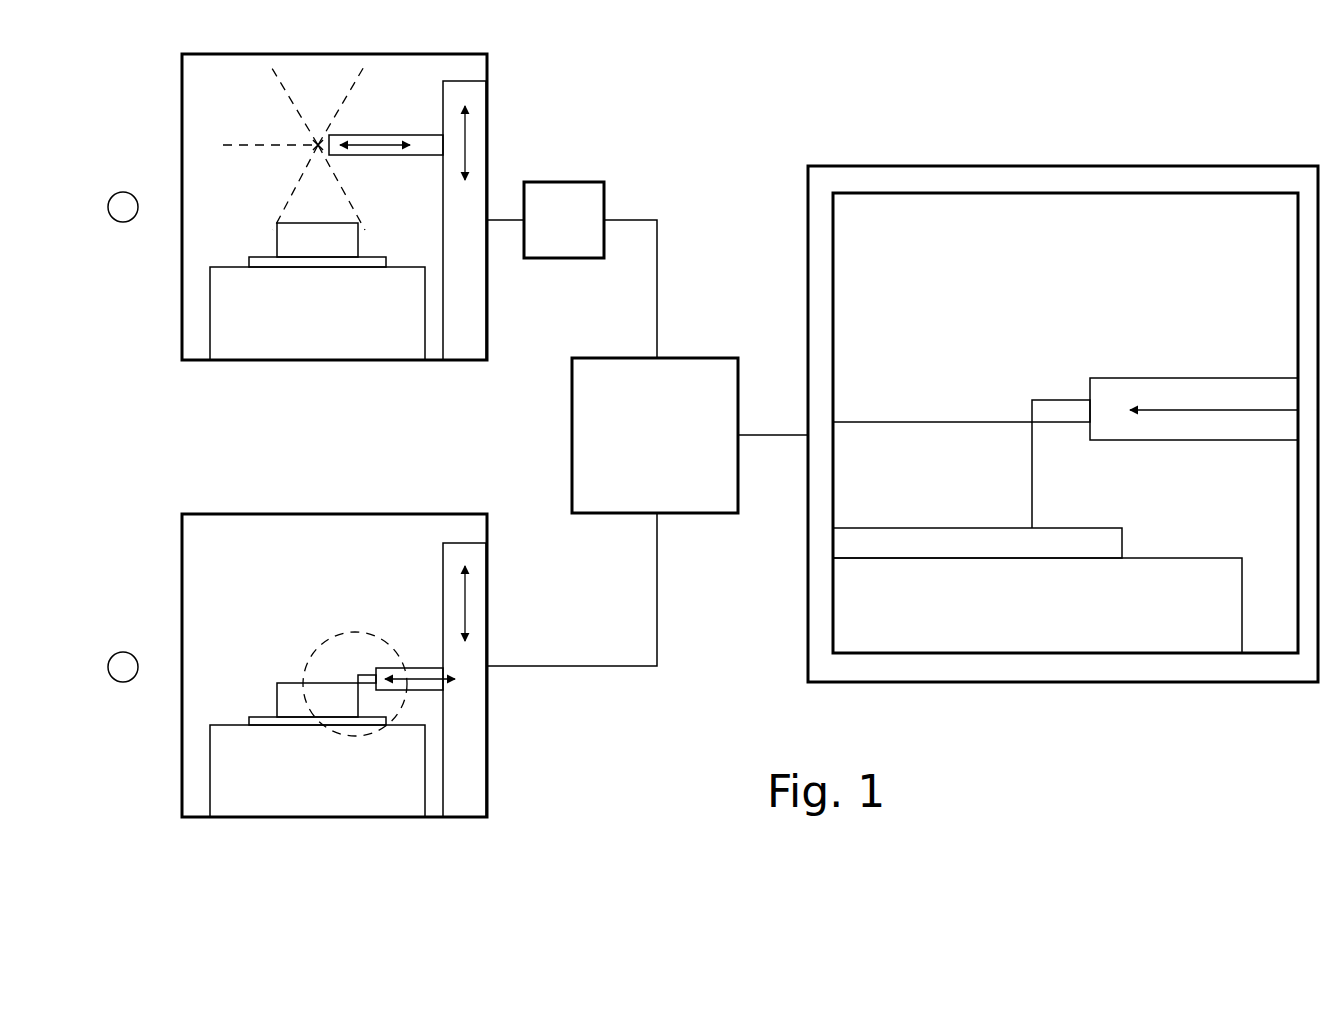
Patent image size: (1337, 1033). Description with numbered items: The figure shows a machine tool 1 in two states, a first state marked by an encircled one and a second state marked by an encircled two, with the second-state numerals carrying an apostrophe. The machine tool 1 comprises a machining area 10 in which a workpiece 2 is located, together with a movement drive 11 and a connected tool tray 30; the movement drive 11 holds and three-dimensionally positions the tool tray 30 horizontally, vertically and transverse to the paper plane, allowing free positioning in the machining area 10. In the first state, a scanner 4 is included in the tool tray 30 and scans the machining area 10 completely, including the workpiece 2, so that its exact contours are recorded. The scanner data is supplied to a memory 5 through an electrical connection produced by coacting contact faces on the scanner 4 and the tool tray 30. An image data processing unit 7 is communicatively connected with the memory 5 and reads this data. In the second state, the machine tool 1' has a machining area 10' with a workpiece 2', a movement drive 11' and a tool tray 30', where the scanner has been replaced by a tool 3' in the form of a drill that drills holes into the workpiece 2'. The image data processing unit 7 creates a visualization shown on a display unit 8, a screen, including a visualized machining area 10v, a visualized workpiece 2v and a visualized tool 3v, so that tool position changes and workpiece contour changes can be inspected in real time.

The machine tool 1 is at (350, 204).
The machining area 10 is at (302, 207).
The movement drive 11 is at (493, 220).
The tool tray 30 is at (450, 138).
The scanner 4 is at (316, 143).
The workpiece 2 is at (281, 291).
The memory 5 is at (580, 200).
The image data processing unit 7 is at (695, 380).
The display unit 8 is at (793, 148).
The visualized machining area 10v is at (943, 257).
The visualized tool 3v is at (1045, 400).
The visualized workpiece 2v is at (977, 500).
The machine tool 1' is at (329, 623).
The machining area 10' is at (301, 665).
The movement drive 11' is at (496, 680).
The tool tray 30' is at (415, 566).
The tool 3' is at (355, 598).
The workpiece 2' is at (281, 750).